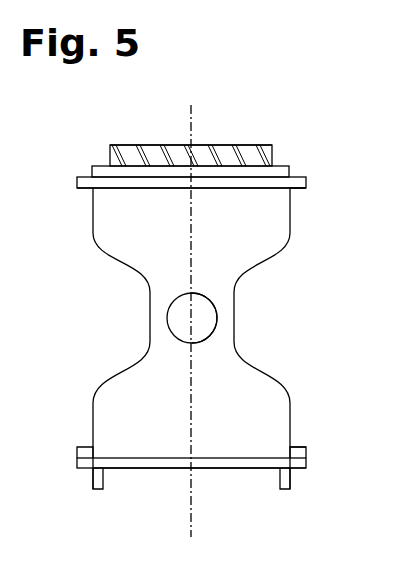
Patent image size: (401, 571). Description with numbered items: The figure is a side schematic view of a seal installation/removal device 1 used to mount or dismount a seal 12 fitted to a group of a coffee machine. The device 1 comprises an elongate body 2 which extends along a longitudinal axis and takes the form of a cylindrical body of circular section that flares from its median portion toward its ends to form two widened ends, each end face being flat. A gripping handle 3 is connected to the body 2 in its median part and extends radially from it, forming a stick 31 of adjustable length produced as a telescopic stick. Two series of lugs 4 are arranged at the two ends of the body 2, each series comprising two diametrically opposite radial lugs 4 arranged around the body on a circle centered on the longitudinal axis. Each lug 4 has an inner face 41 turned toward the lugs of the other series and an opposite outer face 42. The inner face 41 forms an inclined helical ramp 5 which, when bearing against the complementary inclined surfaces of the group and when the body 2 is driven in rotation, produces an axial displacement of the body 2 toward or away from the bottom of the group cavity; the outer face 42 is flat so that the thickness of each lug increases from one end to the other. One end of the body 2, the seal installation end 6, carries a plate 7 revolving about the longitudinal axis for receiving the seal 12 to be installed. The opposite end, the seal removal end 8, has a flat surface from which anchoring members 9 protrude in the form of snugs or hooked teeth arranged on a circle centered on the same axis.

The seal installation/removal device 1 is at (206, 317).
The elongate body 2 is at (165, 242).
The gripping handle 3 is at (178, 319).
The stick 31 is at (203, 315).
The lug 4 is at (307, 182).
The inner face 41 is at (298, 190).
The outer face 42 is at (297, 468).
The ramp 5 is at (86, 191).
The seal installation end 6 is at (91, 172).
The plate 7 is at (252, 145).
The seal removal end 8 is at (173, 469).
The anchoring member 9 is at (97, 478).
The seal 12 is at (175, 153).